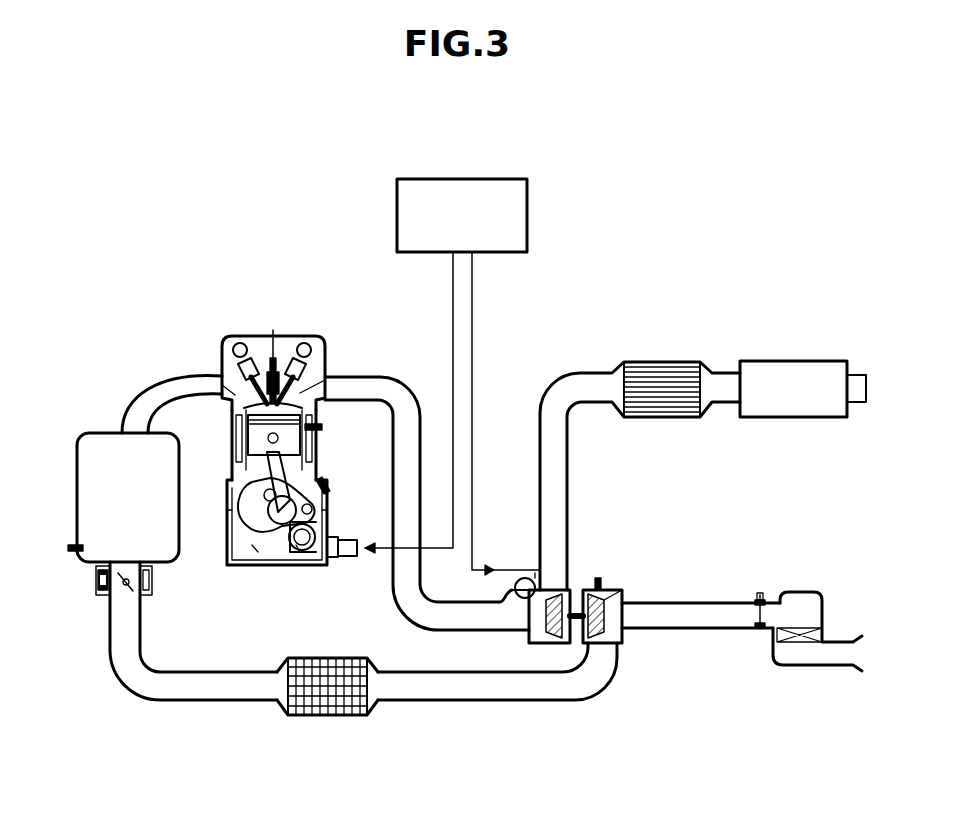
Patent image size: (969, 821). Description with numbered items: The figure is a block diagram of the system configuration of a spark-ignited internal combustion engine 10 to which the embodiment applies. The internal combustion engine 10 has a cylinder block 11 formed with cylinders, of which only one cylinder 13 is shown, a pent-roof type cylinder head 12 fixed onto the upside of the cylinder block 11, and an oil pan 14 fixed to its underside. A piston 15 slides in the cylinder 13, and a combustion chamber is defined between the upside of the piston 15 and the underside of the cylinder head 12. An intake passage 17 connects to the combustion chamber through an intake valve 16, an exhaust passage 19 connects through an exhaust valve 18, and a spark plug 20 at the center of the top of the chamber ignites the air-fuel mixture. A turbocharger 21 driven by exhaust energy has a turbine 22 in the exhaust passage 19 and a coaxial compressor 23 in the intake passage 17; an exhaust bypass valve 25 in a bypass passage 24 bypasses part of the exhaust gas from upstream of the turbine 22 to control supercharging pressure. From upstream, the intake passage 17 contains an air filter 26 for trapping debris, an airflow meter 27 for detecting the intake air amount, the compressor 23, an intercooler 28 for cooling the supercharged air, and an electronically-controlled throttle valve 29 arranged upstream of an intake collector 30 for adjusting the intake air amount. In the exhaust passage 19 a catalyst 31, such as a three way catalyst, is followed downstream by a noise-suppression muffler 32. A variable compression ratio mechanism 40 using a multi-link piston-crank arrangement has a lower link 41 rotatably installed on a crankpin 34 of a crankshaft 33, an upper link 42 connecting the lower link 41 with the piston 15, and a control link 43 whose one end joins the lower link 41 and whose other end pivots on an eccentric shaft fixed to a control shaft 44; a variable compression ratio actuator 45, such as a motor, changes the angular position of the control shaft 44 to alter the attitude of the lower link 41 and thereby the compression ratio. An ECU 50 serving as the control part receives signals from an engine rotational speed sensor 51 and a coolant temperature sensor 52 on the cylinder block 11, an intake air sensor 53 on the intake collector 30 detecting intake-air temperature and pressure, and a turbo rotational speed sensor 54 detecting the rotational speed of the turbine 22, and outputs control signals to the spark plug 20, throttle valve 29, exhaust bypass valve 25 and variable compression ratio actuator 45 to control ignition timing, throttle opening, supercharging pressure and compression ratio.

The internal combustion engine 10 is at (268, 450).
The cylinder block 11 is at (240, 436).
The cylinder head 12 is at (222, 348).
The cylinder 13 is at (270, 478).
The oil pan 14 is at (250, 560).
The piston 15 is at (302, 442).
The intake valve 16 is at (228, 392).
The intake passage 17 is at (150, 398).
The exhaust valve 18 is at (302, 386).
The exhaust passage 19 is at (412, 415).
The spark plug 20 is at (273, 332).
The turbocharger 21 is at (630, 648).
The turbine 22 is at (552, 590).
The compressor 23 is at (625, 595).
The bypass passage 24 is at (505, 596).
The exhaust bypass valve 25 is at (538, 562).
The air filter 26 is at (822, 622).
The airflow meter 27 is at (755, 606).
The intercooler 28 is at (322, 716).
The electronically-controlled throttle valve 29 is at (131, 596).
The intake collector 30 is at (105, 445).
The catalyst 31 is at (655, 375).
The muffler 32 is at (790, 368).
The crankshaft 33 is at (254, 557).
The crankpin 34 is at (283, 548).
The variable compression ratio mechanism 40 is at (268, 532).
The lower link 41 is at (258, 530).
The upper link 42 is at (262, 502).
The control link 43 is at (325, 535).
The control shaft 44 is at (303, 550).
The variable compression ratio actuator 45 is at (348, 560).
The ECU 50 is at (520, 215).
The engine rotational speed sensor 51 is at (330, 495).
The coolant temperature sensor 52 is at (332, 428).
The intake air sensor 53 is at (72, 552).
The turbo rotational speed sensor 54 is at (600, 578).